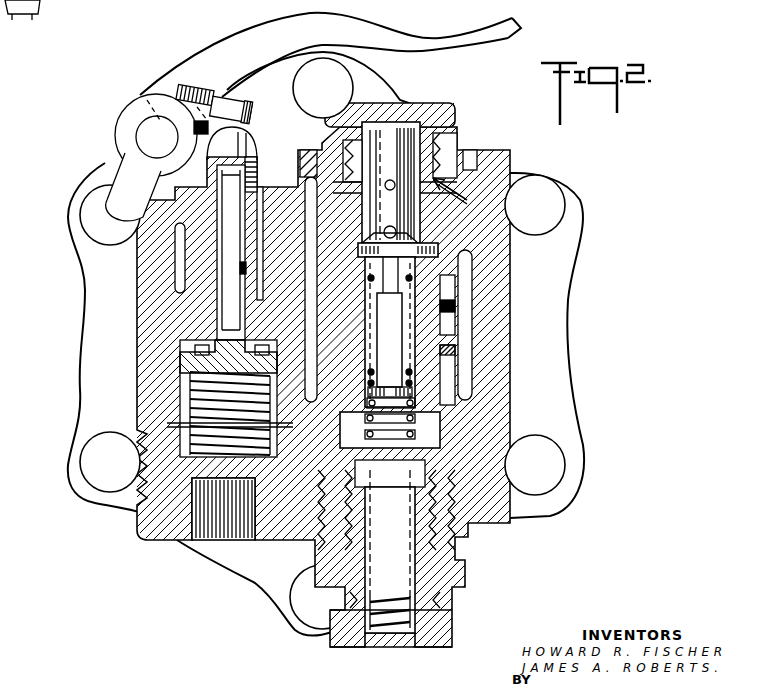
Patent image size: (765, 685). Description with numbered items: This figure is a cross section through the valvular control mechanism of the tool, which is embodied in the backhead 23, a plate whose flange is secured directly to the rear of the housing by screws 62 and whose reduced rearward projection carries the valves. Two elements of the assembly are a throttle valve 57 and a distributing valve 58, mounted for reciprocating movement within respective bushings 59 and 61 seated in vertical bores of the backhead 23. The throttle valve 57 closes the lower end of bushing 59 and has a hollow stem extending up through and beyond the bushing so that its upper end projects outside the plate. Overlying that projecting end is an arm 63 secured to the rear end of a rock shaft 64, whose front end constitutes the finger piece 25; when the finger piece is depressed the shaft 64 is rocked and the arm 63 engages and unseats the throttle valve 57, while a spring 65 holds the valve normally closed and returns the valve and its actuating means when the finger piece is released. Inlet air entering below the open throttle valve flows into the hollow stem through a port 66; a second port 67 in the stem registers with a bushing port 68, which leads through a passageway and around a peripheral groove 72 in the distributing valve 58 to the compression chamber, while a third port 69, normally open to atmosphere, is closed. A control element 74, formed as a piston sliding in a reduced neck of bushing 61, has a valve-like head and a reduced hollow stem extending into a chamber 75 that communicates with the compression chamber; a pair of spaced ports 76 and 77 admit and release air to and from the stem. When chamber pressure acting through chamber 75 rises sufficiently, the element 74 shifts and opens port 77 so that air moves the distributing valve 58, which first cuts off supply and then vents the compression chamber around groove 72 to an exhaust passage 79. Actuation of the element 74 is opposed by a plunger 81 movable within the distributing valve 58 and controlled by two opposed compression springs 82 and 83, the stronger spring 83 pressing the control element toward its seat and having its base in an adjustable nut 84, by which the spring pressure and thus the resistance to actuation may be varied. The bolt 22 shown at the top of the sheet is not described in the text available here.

The bolt 22 is at (103, 0).
The backhead 23 is at (575, 286).
The finger piece 25 is at (423, 43).
The throttle valve 57 is at (183, 352).
The distributing valve 58 is at (478, 287).
The bushing 59 is at (182, 302).
The bushing 61 is at (468, 337).
The screws 62 is at (338, 82).
The arm 63 is at (237, 90).
The rock shaft 64 is at (143, 125).
The spring 65 is at (190, 390).
The port 66 is at (245, 300).
The second port 67 is at (245, 244).
The bushing port 68 is at (246, 270).
The third port 69 is at (255, 188).
The peripheral groove 72 is at (470, 313).
The control element 74 is at (440, 212).
The chamber 75 is at (418, 118).
The port 76 is at (385, 187).
The port 77 is at (380, 232).
The exhaust passage 79 is at (475, 522).
The plunger 81 is at (397, 325).
The compression spring 82 is at (390, 397).
The compression spring 83 is at (392, 632).
The adjustable nut 84 is at (342, 640).